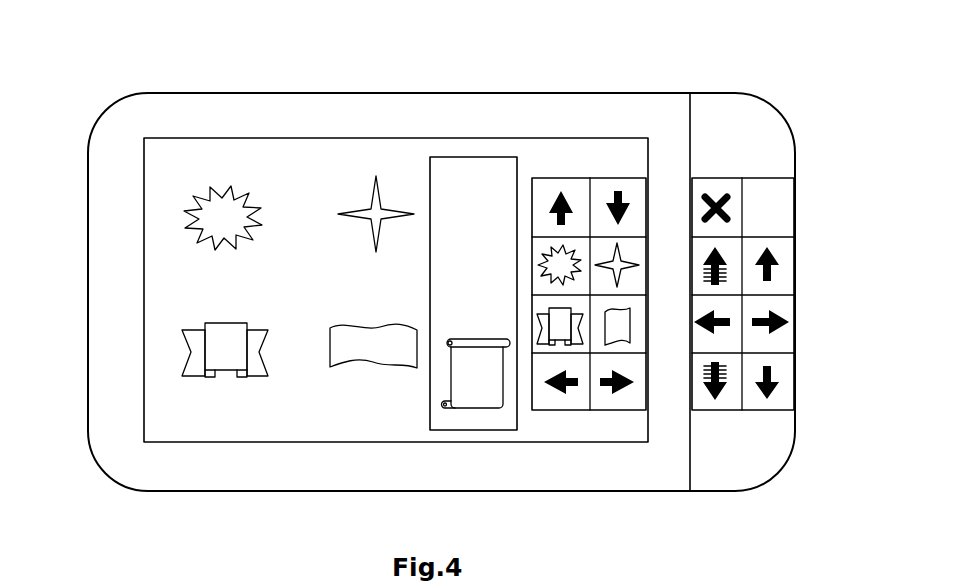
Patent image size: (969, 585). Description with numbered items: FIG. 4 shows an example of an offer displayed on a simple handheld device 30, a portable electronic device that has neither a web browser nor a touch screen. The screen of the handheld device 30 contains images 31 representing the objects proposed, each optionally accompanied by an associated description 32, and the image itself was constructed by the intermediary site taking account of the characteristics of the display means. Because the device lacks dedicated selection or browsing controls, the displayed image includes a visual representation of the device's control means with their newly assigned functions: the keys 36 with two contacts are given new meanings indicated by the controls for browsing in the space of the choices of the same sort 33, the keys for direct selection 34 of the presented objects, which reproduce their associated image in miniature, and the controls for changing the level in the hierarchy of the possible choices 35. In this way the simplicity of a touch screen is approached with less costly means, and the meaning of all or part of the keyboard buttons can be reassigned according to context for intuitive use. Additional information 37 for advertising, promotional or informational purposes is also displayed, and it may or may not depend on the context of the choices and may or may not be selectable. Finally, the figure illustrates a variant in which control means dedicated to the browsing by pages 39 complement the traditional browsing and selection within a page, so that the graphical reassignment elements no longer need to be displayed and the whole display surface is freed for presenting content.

The handheld device 30 is at (88, 213).
The images 31 is at (250, 407).
The associated description 32 is at (330, 402).
The controls for browsing in the space of the choices of the same sort 33 is at (617, 400).
The keys for direct selection 34 is at (565, 272).
The controls for changing the level in the hierarchy of the possible choices 35 is at (617, 190).
The keys with two contacts 36 is at (781, 382).
The additional information 37 is at (463, 157).
The control means dedicated to the browsing by pages 39 is at (720, 287).